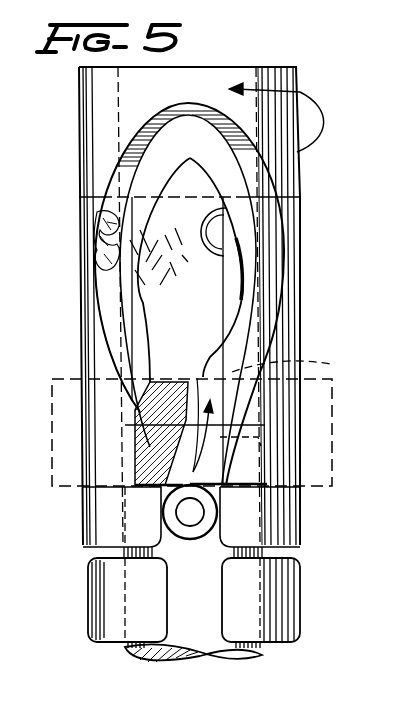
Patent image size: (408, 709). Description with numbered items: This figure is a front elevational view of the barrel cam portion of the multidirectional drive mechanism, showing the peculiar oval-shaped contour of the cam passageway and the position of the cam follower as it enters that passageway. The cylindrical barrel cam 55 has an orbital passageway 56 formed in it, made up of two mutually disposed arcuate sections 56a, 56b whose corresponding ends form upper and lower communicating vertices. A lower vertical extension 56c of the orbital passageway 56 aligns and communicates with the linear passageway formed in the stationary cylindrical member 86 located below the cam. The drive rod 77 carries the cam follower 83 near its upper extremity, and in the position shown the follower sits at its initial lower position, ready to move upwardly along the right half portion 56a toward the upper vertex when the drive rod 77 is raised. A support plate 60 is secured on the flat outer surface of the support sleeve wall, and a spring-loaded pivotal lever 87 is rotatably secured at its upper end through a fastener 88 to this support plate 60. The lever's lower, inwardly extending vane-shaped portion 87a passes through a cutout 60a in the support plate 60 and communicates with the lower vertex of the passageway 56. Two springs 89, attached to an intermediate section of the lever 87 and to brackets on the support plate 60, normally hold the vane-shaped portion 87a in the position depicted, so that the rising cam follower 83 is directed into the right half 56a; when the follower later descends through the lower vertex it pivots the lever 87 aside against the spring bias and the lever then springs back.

The barrel cam 55 is at (241, 72).
The orbital passageway 56 is at (123, 153).
The right half portion of the orbital passageway 56a is at (250, 330).
The arcuate section of the orbital passageway 56b is at (128, 312).
The lower vertical extension of the orbital passageway 56c is at (178, 467).
The support plate 60 is at (302, 217).
The cutout in the support plate 60a is at (326, 380).
The drive rod 77 is at (262, 653).
The cam follower 83 is at (190, 540).
The stationary cylindrical member 86 is at (282, 592).
The spring-loaded pivotal lever 87 is at (252, 300).
The vane-shaped portion of the lever 87a is at (197, 378).
The fastener 88 is at (250, 240).
The springs 89 is at (150, 305).